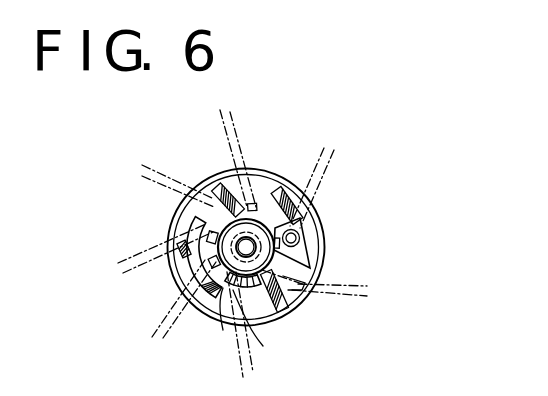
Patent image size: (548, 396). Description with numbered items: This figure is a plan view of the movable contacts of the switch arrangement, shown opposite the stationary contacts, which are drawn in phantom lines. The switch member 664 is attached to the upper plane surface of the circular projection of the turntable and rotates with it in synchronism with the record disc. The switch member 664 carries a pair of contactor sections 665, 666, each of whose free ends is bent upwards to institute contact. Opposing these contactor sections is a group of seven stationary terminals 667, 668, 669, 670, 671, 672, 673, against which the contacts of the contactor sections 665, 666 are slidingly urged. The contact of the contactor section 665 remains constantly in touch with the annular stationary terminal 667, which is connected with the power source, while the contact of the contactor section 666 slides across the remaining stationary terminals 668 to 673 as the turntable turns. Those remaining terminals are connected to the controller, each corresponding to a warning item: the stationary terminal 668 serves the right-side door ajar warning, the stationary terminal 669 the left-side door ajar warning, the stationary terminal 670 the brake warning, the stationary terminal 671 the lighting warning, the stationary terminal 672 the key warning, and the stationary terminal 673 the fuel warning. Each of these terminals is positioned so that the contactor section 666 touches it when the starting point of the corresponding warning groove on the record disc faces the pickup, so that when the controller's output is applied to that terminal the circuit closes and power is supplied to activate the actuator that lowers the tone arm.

The switch member 664 is at (324, 242).
The contactor section 665 is at (190, 305).
The contactor section 666 is at (240, 290).
The stationary terminal 667 is at (258, 198).
The stationary terminal 668 is at (208, 176).
The stationary terminal 669 is at (164, 276).
The stationary terminal 670 is at (158, 312).
The stationary terminal 671 is at (252, 330).
The stationary terminal 672 is at (318, 268).
The stationary terminal 673 is at (305, 217).